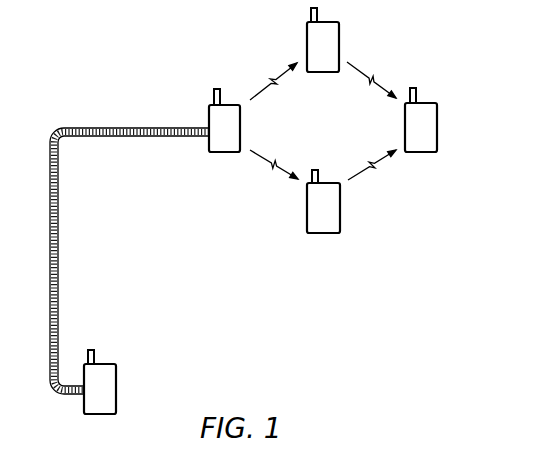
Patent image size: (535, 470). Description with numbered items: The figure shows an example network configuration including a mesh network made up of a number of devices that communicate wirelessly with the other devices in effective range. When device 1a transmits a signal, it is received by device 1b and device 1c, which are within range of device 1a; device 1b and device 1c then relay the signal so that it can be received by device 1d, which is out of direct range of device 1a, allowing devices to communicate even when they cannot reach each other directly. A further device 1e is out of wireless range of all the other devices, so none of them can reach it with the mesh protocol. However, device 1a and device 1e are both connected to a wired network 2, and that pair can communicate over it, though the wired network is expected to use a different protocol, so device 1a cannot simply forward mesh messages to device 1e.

The wired network 2 is at (49, 237).
The device 1a is at (224, 153).
The device 1b is at (342, 35).
The device 1c is at (343, 229).
The device 1d is at (440, 118).
The further device 1e is at (118, 376).